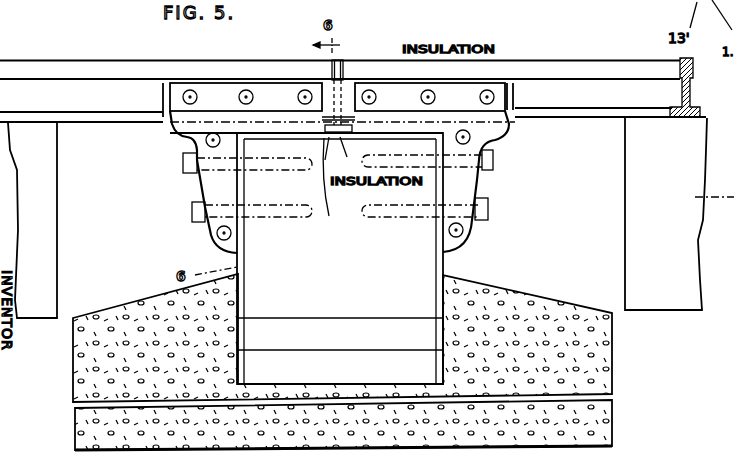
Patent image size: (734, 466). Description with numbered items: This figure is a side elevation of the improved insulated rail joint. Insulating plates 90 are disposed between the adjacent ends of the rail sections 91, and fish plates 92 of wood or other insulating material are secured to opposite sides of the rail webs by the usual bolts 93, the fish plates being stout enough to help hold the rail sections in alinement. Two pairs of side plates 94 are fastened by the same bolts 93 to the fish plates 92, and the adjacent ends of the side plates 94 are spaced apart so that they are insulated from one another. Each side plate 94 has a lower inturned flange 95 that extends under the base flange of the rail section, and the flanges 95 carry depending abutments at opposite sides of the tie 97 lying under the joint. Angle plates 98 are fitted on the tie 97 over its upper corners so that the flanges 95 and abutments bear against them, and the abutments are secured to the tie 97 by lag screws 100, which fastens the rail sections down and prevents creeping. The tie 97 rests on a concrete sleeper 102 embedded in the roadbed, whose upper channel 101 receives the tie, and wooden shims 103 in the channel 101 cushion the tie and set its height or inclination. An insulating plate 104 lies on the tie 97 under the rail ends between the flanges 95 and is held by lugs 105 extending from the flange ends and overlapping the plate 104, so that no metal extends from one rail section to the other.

The insulating plates 90 is at (343, 72).
The rail sections 91 is at (150, 67).
The fish plates 92 is at (515, 97).
The bolts 93 is at (241, 88).
The side plates 94 is at (372, 141).
The lower inturned flanges 95 is at (497, 142).
The tie 97 is at (340, 258).
The angle plates 98 is at (257, 138).
The lag screws 100 is at (192, 212).
The channel 101 is at (445, 296).
The concrete sleeper 102 is at (528, 303).
The shims 103 is at (335, 368).
The insulating plate 104 is at (346, 148).
The lugs 105 is at (330, 190).